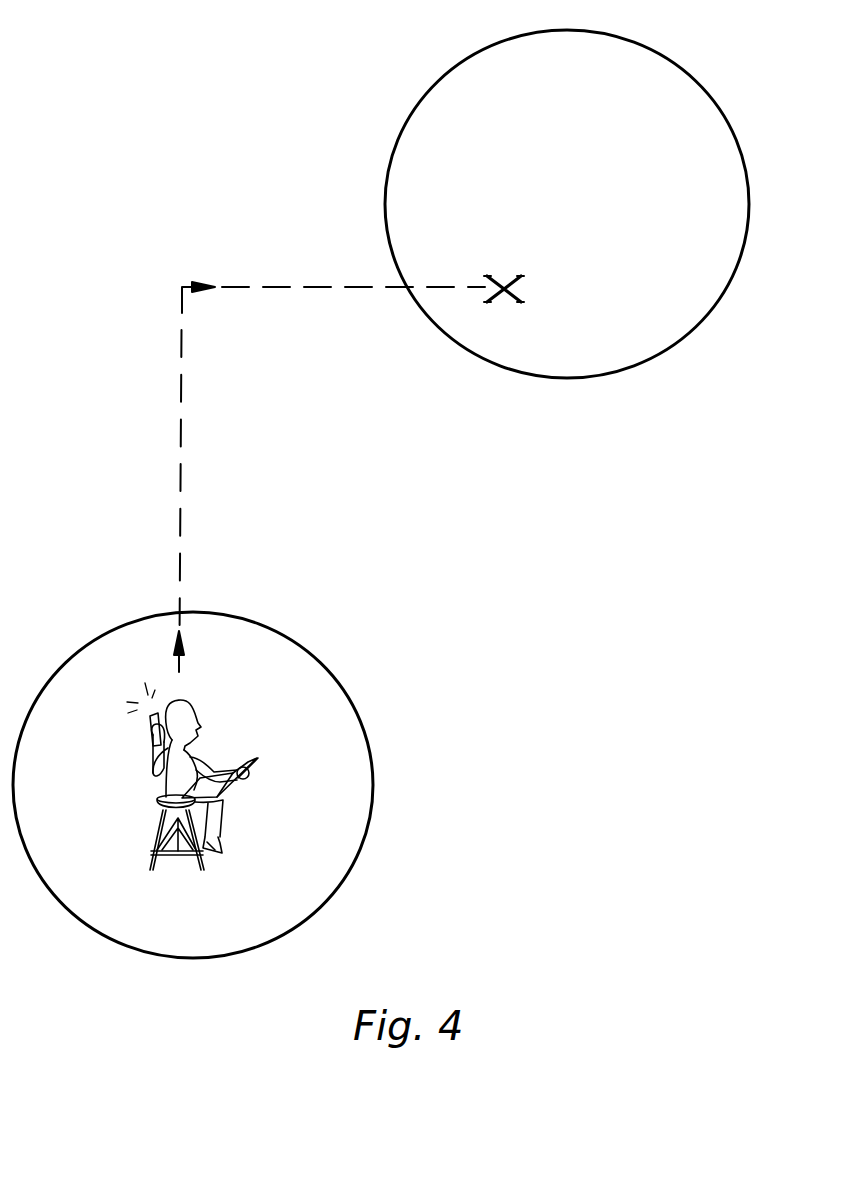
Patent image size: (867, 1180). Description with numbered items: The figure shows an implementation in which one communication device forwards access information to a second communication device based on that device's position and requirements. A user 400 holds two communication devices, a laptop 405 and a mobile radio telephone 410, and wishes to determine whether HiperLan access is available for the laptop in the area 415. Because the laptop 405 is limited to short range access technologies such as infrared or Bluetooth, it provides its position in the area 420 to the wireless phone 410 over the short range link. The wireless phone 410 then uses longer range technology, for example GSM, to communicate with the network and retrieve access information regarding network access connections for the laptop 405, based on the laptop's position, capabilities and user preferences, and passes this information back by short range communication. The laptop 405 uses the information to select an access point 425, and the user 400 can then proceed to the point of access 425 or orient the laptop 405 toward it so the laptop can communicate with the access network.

The user 400 is at (155, 763).
The laptop 405 is at (240, 788).
The mobile radio telephone 410 is at (150, 722).
The area 415 is at (703, 87).
The area 420 is at (373, 793).
The access point 425 is at (517, 268).